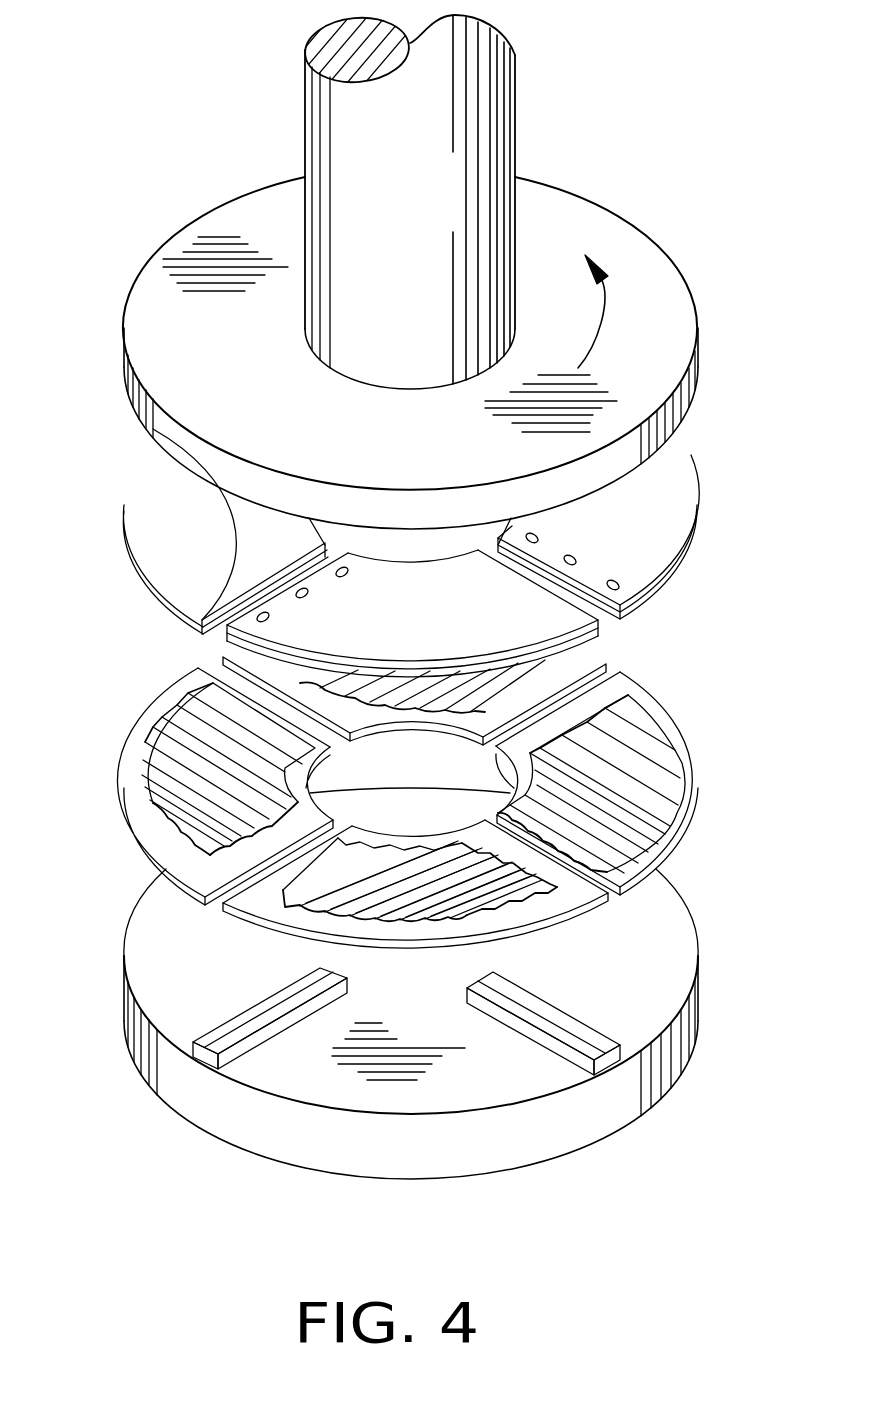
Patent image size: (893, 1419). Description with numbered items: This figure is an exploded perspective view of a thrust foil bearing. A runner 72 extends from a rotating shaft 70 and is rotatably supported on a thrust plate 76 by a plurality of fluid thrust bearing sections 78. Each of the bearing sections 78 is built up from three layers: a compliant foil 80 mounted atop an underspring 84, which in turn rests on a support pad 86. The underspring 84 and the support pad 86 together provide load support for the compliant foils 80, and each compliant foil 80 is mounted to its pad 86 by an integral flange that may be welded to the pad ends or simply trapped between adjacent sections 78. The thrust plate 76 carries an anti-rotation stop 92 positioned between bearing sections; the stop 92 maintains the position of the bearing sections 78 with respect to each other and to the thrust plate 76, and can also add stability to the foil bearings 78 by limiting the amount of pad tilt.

The rotating shaft 70 is at (483, 103).
The runner 72 is at (671, 302).
The thrust plate 76 is at (177, 1073).
The fluid thrust bearing section 78 is at (134, 556).
The compliant foil 80 is at (655, 506).
The underspring 84 is at (638, 720).
The support pad 86 is at (690, 770).
The anti-rotation stop 92 is at (253, 1013).